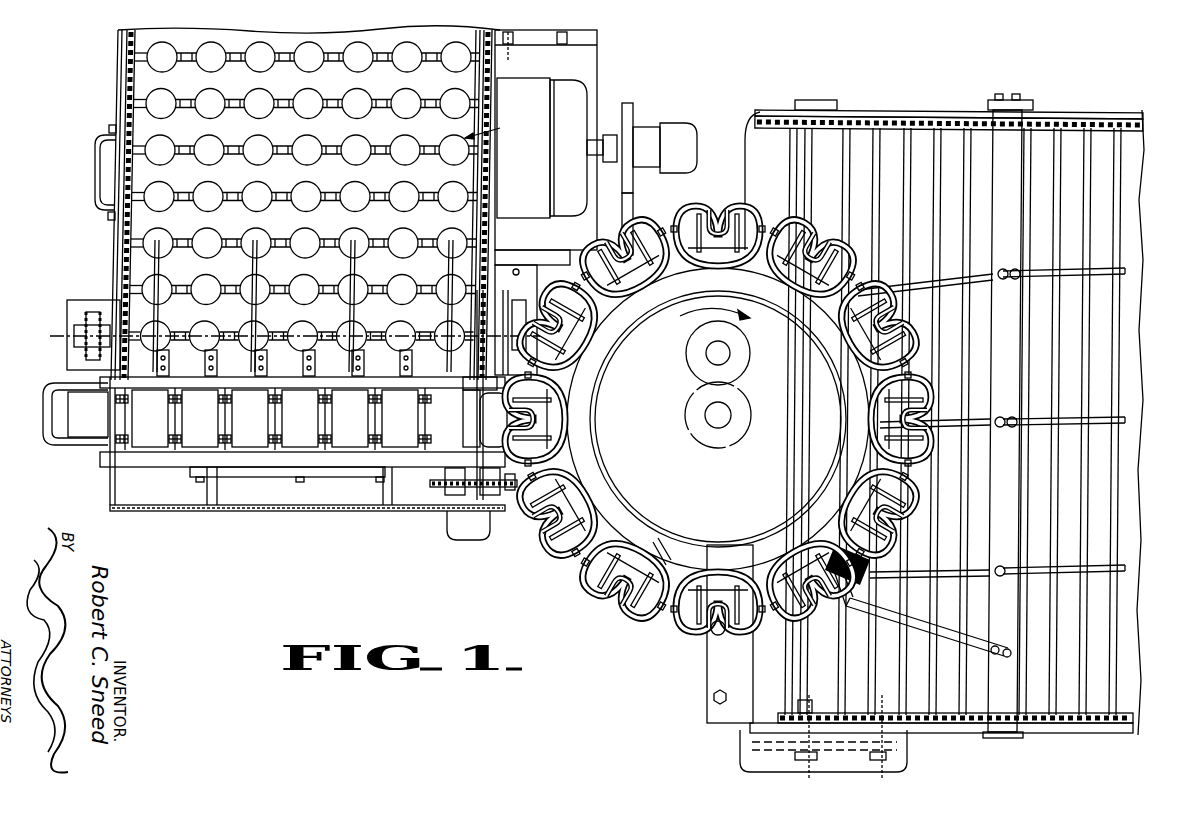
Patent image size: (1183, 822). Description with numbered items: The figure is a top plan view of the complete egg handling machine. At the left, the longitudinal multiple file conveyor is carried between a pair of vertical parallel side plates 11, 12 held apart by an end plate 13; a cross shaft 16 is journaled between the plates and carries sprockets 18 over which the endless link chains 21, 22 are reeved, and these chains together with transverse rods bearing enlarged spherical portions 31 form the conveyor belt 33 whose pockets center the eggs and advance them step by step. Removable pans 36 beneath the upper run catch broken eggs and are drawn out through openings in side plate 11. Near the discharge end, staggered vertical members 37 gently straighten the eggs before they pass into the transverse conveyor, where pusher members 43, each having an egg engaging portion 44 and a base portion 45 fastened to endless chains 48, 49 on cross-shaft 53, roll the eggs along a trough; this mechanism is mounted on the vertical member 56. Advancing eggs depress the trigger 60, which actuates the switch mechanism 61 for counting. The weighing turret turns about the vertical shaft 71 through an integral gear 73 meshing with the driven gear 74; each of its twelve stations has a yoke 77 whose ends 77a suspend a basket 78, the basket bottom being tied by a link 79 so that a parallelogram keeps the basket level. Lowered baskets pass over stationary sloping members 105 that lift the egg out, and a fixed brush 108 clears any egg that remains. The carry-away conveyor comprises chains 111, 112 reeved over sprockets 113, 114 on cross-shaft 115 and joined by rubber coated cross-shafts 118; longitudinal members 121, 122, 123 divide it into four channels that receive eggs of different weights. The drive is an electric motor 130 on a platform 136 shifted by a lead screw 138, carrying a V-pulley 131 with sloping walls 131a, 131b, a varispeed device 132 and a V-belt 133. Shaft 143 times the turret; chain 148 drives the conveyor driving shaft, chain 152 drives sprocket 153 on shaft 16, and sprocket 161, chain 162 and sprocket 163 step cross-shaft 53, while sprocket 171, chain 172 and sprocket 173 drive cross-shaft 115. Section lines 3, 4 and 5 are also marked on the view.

The section line 3- 3 is at (328, 372).
The section line 4- 4 is at (110, 243).
The section line 5- 5 is at (442, 404).
The side plate 11 is at (118, 74).
The side plate 12 is at (493, 115).
The end plate 13 is at (262, 511).
The cross shaft 16 is at (242, 328).
The sprocket 18 is at (138, 326).
The endless link chain 21 is at (140, 88).
The endless link chain 22 is at (470, 76).
The spherical portion 31 is at (252, 96).
The longitudinal conveyor belt 33 is at (497, 125).
The removable pan 36 is at (95, 183).
The vertical longitudinally extending member 37 is at (357, 272).
The pusher member 43 is at (76, 444).
The egg engaging portion 44 is at (54, 386).
The base portion 45 is at (200, 452).
The endless chain 48 is at (276, 456).
The endless chain 49 is at (324, 398).
The cross-shaft 53 is at (125, 400).
The vertical member 56 is at (214, 502).
The trigger 60 is at (473, 388).
The switch mechanism 61 is at (476, 540).
The vertical shaft 71 is at (745, 408).
The integral gear 73 is at (736, 443).
The gear 74 is at (692, 368).
The second yoke 77 is at (578, 556).
The yoke ends 77a is at (592, 572).
The basket 78 is at (560, 532).
The link 79 is at (578, 492).
The stationary member 105 is at (648, 533).
The brush member 108 is at (818, 540).
The chain 111 is at (950, 734).
The chain 112 is at (907, 128).
The sprocket 113 is at (798, 706).
The sprocket 114 is at (790, 106).
The cross-shaft 115 is at (804, 189).
The rubber coated cross-shaft 118 is at (1090, 224).
The longitudinal member 121 is at (1128, 268).
The longitudinal member 122 is at (1135, 416).
The longitudinal member 123 is at (1128, 566).
The electric motor 130 is at (530, 73).
The V-pulley 131 is at (632, 104).
The sloping side wall 131a is at (614, 133).
The sloping side wall 131b is at (648, 128).
The varispeed device 132 is at (688, 130).
The V-belt 133 is at (633, 218).
The platform 136 is at (597, 52).
The lead screw 138 is at (514, 38).
The shaft 143 is at (703, 353).
The chain 148 is at (516, 320).
The chain 152 is at (86, 315).
The sprocket 153 is at (75, 325).
The sprocket 161 is at (452, 490).
The chain 162 is at (508, 492).
The sprocket 163 is at (486, 490).
The sprocket 171 is at (876, 760).
The chain 172 is at (838, 762).
The sprocket 173 is at (792, 760).